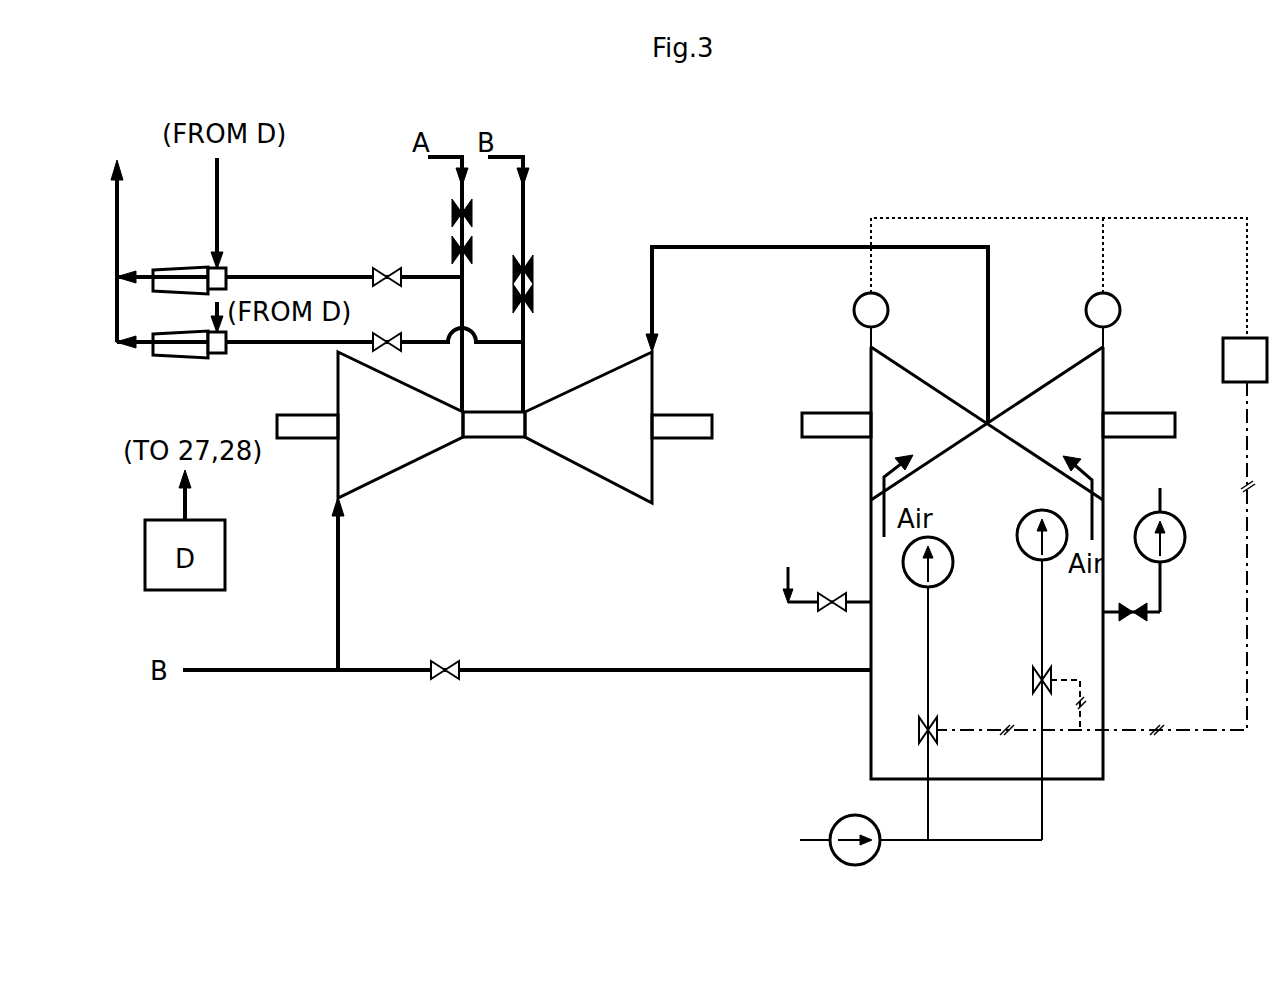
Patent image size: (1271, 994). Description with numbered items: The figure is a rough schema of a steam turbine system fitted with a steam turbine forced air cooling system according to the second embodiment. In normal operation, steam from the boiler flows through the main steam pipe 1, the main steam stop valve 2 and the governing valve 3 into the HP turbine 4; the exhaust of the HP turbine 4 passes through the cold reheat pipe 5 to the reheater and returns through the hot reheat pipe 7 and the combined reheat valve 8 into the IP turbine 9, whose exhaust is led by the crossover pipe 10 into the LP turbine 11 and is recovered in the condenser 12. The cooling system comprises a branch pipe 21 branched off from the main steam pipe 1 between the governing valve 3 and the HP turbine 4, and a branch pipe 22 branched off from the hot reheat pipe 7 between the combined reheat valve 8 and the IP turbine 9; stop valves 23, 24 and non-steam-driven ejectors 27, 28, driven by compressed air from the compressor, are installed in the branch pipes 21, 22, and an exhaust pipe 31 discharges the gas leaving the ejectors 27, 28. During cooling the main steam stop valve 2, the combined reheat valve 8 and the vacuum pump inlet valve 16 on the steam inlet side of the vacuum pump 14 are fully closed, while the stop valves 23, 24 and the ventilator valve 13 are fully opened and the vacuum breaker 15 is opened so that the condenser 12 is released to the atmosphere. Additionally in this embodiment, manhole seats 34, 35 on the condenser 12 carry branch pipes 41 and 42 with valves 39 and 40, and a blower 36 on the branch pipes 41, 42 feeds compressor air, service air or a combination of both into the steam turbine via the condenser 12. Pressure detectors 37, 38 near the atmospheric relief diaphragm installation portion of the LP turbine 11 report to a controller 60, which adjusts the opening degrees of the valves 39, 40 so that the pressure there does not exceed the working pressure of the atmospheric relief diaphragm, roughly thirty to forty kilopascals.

The main steam pipe 1 is at (455, 185).
The main steam stop valve 2 is at (452, 210).
The governing valve 3 is at (452, 246).
The HP turbine 4 is at (415, 462).
The cold reheat pipe 5 is at (340, 567).
The hot reheat pipe 7 is at (527, 225).
The combined reheat valve 8 is at (533, 280).
The IP turbine 9 is at (578, 467).
The crossover pipe 10 is at (745, 247).
The LP turbine 11 is at (915, 470).
The condenser 12 is at (1105, 672).
The ventilator valve 13 is at (455, 680).
The vacuum pump 14 is at (1185, 548).
The vacuum breaker 15 is at (835, 612).
The vacuum pump inlet valve 16 is at (1135, 620).
The branch pipe 21 is at (312, 277).
The branch pipe 22 is at (305, 342).
The stop valve 23 is at (370, 272).
The stop valve 24 is at (398, 336).
The ejector 27 is at (175, 268).
The ejector 28 is at (210, 356).
The exhaust pipe 31 is at (119, 205).
The manhole seat 34 is at (953, 560).
The manhole seat 35 is at (1040, 505).
The blower 36 is at (835, 820).
The pressure detector 37 is at (861, 325).
The pressure detector 38 is at (1087, 320).
The valve 39 is at (915, 745).
The valve 40 is at (1033, 665).
The branch pipe 41 is at (1040, 615).
The branch pipe 42 is at (925, 635).
The controller 60 is at (1222, 338).